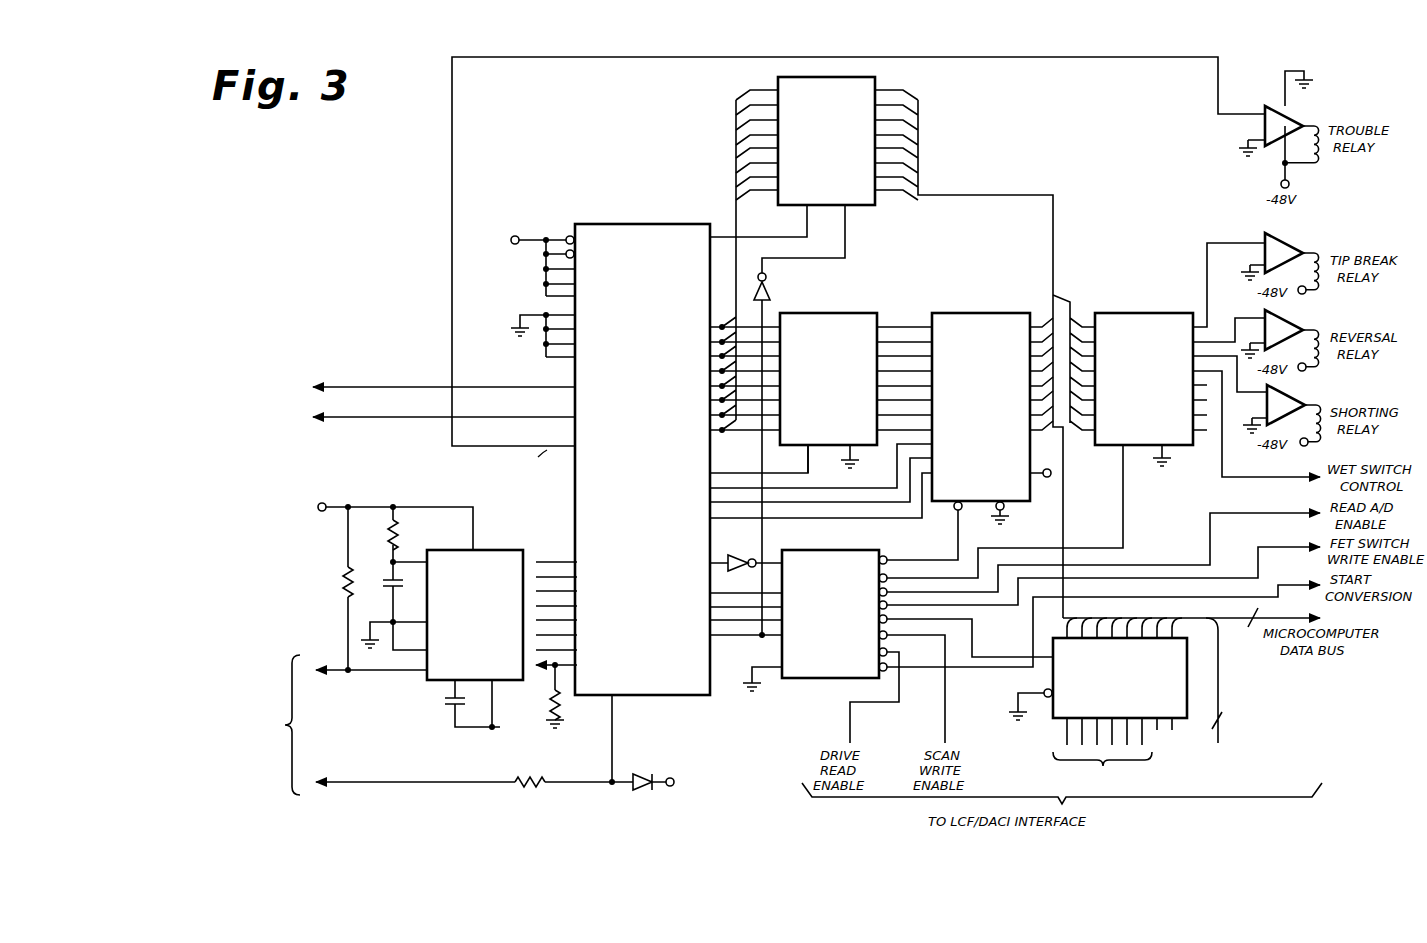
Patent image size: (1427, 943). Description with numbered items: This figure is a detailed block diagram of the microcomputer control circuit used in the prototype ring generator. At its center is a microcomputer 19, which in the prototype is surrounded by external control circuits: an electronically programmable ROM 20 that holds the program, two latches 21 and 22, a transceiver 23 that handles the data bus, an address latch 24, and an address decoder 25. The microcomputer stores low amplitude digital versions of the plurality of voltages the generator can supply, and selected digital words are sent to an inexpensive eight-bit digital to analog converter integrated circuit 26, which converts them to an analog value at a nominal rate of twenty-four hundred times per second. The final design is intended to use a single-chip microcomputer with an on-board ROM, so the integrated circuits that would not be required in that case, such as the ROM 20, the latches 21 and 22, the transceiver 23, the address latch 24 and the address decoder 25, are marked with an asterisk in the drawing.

The 6803 microcomputer 19 is at (657, 223).
The electronically programmable ROM 20 is at (990, 313).
The latch 21 is at (1148, 313).
The latch 22 is at (1186, 678).
The transceiver 23 is at (867, 207).
The address latch 24 is at (846, 313).
The address decoder 25 is at (843, 550).
The digital to analog converter integrated circuit 26 is at (493, 548).